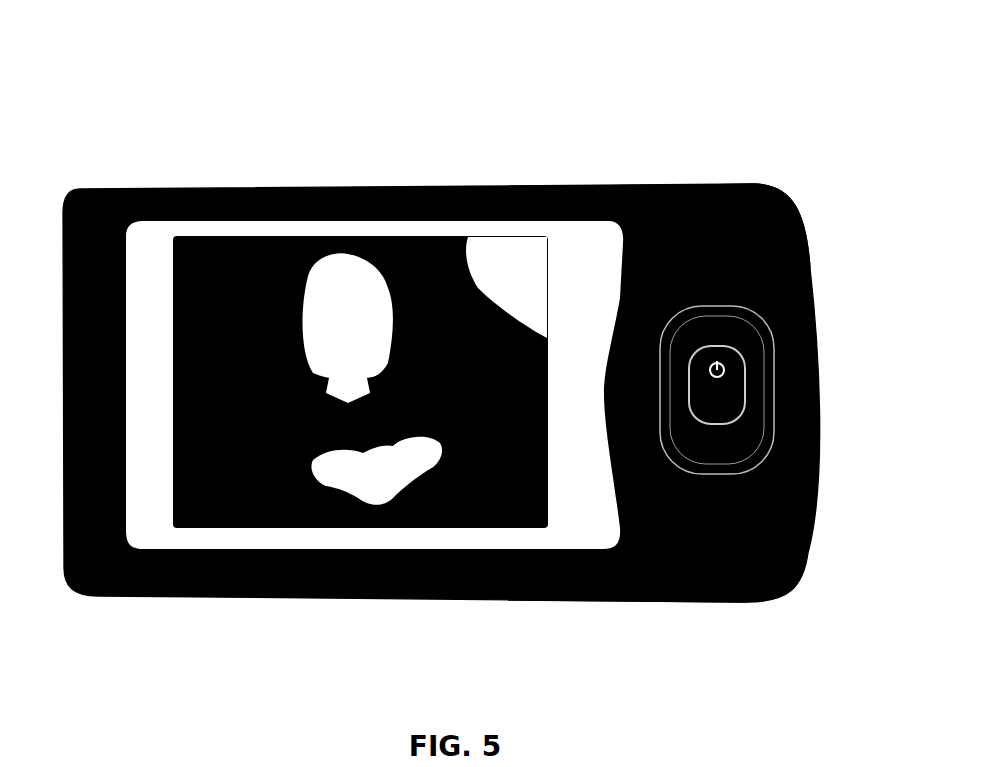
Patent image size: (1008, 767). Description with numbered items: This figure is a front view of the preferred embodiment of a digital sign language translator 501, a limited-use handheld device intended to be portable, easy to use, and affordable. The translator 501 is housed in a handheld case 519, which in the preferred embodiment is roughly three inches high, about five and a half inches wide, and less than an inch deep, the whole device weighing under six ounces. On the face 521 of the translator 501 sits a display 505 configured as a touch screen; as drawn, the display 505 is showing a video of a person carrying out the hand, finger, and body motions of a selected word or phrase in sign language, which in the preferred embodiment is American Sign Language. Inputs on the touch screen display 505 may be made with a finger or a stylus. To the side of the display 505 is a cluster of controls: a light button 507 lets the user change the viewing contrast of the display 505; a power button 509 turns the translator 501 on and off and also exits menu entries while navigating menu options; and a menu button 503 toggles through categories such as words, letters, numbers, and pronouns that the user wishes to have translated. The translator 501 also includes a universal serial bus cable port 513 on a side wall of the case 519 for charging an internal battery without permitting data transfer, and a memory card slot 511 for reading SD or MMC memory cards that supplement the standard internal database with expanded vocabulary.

The translator 501 is at (475, 374).
The menu button 503 is at (727, 487).
The display 505 is at (470, 520).
The light button 507 is at (695, 305).
The power button 509 is at (652, 273).
The memory card slot 511 is at (556, 177).
The universal serial bus (USB) cable port 513 is at (713, 175).
The handheld case 519 is at (677, 592).
The face 521 is at (165, 560).